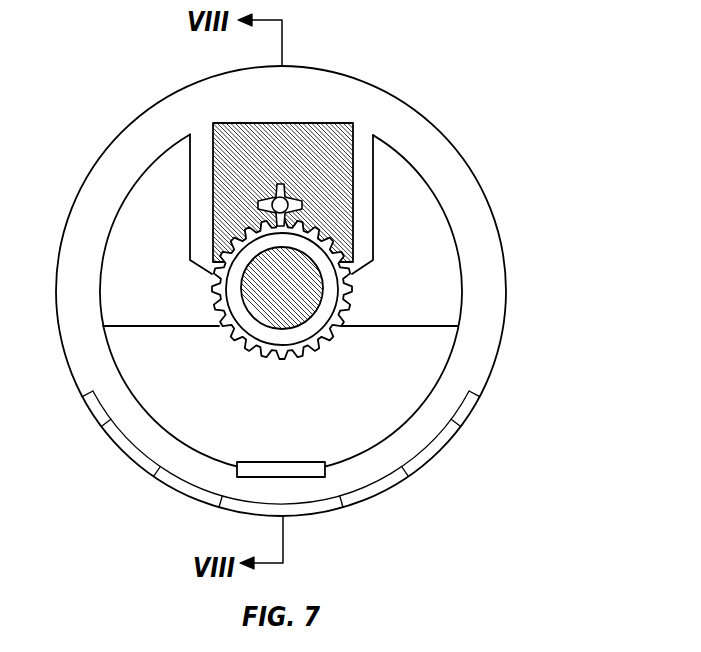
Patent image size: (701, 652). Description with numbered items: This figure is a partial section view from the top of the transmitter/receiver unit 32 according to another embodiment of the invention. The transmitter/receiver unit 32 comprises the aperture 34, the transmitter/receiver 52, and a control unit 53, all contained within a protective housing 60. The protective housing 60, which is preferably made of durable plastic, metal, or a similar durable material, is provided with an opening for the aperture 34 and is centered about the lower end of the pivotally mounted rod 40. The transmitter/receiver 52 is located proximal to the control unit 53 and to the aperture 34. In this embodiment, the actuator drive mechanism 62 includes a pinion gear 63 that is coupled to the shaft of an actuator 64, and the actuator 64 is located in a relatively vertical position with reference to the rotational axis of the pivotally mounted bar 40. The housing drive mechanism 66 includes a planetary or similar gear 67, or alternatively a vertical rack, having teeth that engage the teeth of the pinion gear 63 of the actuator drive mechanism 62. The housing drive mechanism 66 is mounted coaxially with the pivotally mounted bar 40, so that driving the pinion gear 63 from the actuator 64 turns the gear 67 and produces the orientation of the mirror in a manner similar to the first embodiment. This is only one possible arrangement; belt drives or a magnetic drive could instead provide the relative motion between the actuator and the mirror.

The transmitter/receiver unit 32 is at (510, 379).
The aperture 34 is at (298, 477).
The pivotally mounted rod 40 is at (294, 304).
The transmitter/receiver 52 is at (296, 421).
The control unit 53 is at (163, 290).
The protective housing 60 is at (498, 263).
The actuator drive mechanism 62 is at (281, 186).
The pinion gear 63 is at (279, 199).
The actuator 64 is at (336, 194).
The housing drive mechanism 66 is at (326, 345).
The planetary gear 67 is at (247, 323).